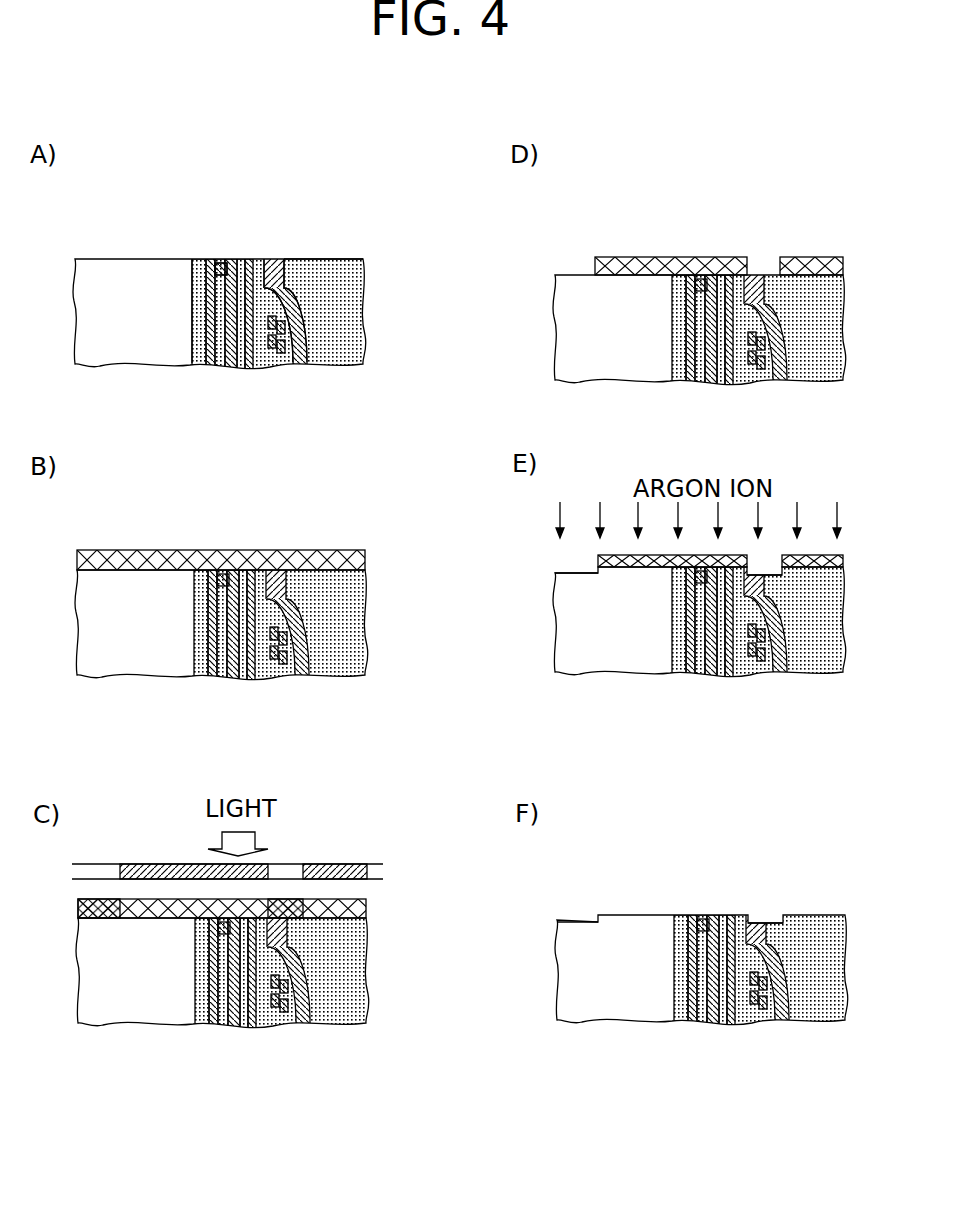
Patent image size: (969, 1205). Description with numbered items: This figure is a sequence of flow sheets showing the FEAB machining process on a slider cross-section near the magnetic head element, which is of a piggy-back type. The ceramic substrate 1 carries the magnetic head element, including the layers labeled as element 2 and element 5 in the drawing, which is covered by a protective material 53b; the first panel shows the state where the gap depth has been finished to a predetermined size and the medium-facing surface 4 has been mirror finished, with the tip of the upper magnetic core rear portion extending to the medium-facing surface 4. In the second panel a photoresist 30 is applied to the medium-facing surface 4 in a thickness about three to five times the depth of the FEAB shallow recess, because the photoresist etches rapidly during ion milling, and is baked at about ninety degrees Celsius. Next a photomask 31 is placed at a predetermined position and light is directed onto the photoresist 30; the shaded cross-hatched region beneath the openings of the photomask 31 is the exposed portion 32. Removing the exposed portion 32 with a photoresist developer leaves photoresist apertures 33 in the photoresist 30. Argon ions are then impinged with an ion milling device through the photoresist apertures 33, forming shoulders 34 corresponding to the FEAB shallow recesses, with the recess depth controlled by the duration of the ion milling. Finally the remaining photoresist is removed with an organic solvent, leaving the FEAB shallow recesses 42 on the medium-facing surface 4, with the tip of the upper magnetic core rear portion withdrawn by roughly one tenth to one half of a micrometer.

The ceramic substrate 1 is at (90, 335).
The lower shield layer 2 is at (218, 263).
The medium-facing surface 4 is at (160, 258).
The magnetoresistive element 5 is at (252, 282).
The protective material 53b is at (325, 262).
The photoresist 30 is at (345, 552).
The photomask 31 is at (345, 866).
The exposed portion 32 is at (82, 900).
The photoresist apertures 33 is at (577, 268).
The shoulders 34 is at (767, 563).
The FEAB shallow recesses 42 is at (578, 921).